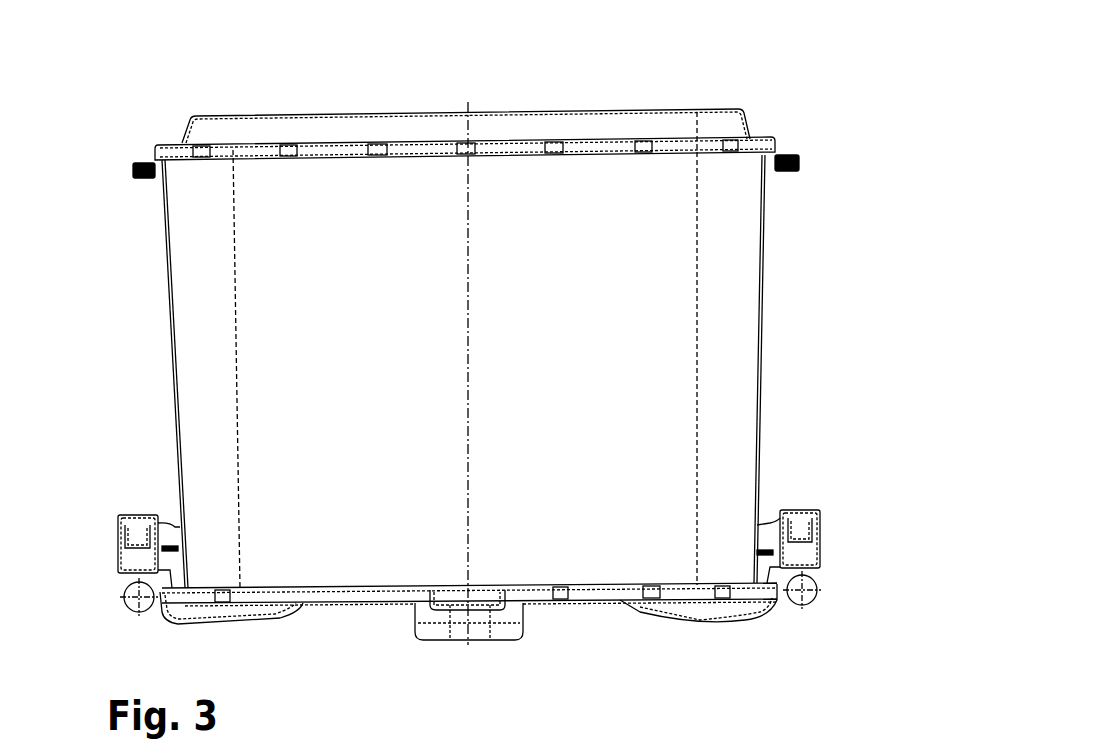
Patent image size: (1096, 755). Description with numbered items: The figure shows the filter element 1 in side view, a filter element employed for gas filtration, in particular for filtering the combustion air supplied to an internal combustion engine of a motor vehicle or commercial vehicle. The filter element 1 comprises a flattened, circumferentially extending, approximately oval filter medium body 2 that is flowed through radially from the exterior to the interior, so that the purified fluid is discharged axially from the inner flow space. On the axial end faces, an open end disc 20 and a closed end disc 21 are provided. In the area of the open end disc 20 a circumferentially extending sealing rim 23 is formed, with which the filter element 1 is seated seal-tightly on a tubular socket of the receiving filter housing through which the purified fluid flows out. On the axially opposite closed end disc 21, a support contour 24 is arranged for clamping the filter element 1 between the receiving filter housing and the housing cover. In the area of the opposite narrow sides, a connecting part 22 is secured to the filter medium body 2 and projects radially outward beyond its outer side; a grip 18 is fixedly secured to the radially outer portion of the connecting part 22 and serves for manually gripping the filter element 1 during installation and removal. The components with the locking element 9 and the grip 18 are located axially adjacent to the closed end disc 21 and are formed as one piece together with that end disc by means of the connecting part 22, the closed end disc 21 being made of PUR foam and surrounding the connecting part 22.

The filter element 1 is at (692, 80).
The filter medium body 2 is at (740, 318).
The locking element 9 is at (130, 542).
The grip 18 is at (138, 600).
The open end disc 20 is at (492, 145).
The closed end disc 21 is at (592, 595).
The connecting part 22 is at (213, 615).
The sealing rim 23 is at (297, 120).
The support contour 24 is at (433, 632).